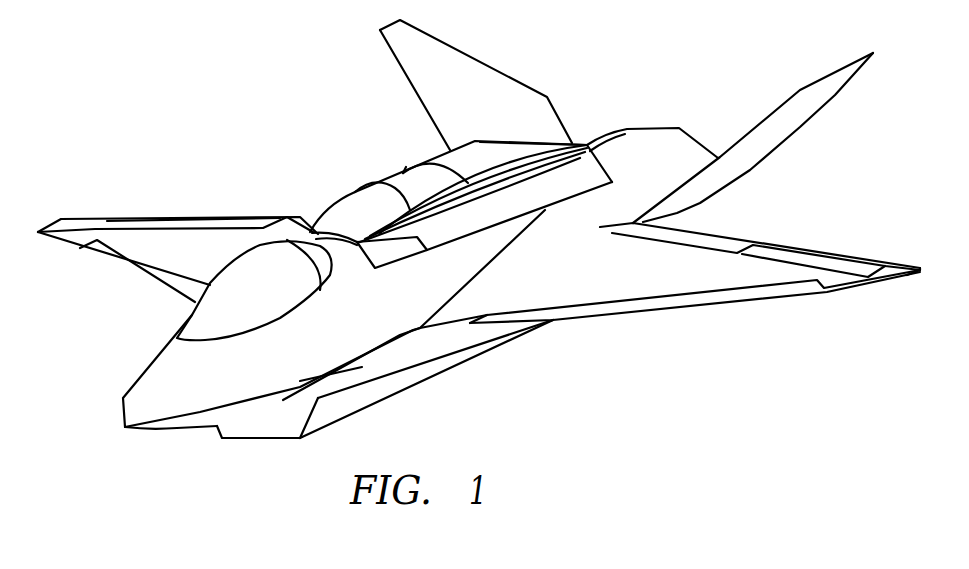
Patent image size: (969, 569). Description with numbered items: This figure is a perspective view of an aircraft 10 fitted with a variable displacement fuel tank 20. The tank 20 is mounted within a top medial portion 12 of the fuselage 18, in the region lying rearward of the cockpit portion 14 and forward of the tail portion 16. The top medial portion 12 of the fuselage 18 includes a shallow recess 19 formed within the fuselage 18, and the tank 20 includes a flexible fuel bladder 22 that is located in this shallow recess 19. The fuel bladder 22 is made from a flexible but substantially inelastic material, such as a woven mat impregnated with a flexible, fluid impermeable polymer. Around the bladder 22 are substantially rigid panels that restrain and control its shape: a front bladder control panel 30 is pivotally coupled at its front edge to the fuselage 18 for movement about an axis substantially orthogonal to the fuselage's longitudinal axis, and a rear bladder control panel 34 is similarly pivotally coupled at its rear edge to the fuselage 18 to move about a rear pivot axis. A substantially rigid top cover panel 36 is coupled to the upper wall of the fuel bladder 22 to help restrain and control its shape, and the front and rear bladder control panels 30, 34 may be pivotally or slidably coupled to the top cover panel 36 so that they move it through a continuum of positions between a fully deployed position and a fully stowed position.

The aircraft 10 is at (479, 229).
The top medial portion 12 is at (400, 272).
The cockpit portion 14 is at (193, 327).
The tail portion 16 is at (652, 137).
The fuselage 18 is at (600, 203).
The shallow recess 19 is at (492, 205).
The variable displacement fuel tank 20 is at (476, 195).
The flexible fuel bladder 22 is at (527, 165).
The front bladder control panel 30 is at (353, 195).
The rear bladder control panel 34 is at (543, 138).
The top cover panel 36 is at (480, 147).